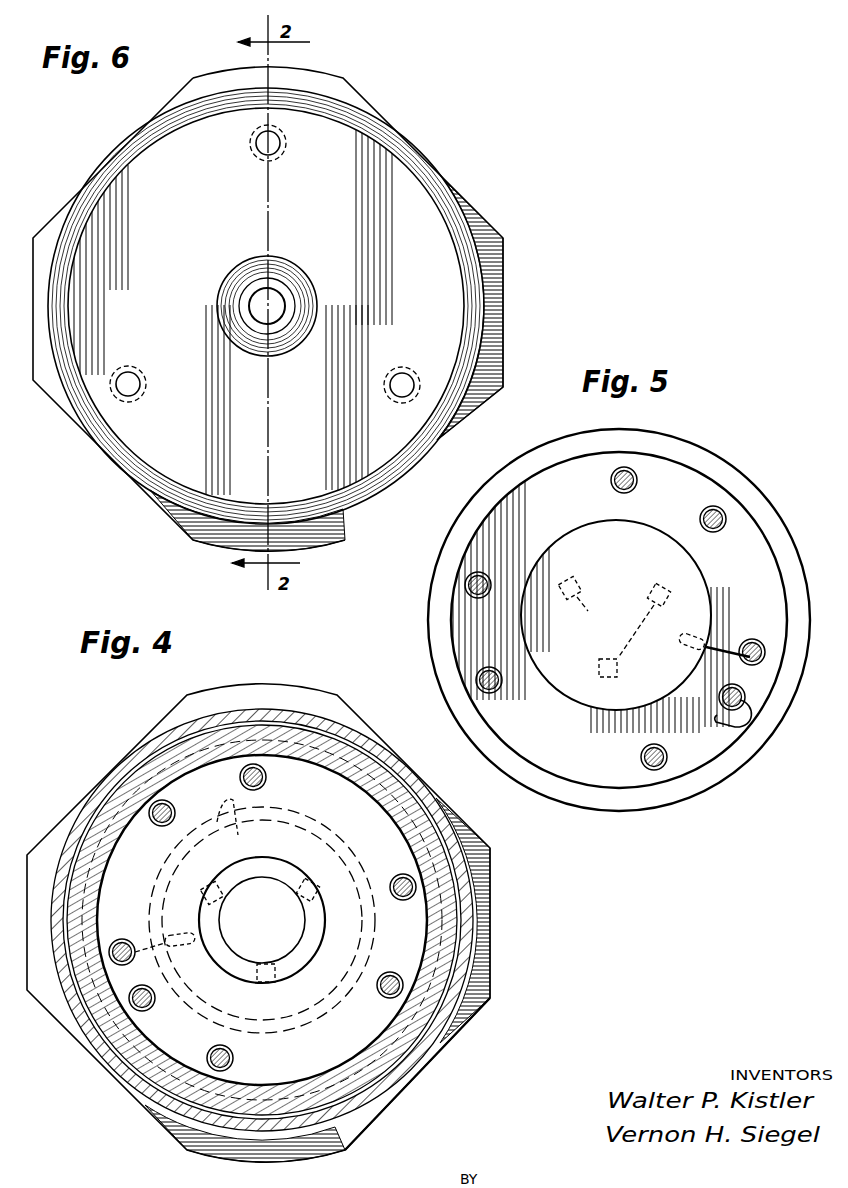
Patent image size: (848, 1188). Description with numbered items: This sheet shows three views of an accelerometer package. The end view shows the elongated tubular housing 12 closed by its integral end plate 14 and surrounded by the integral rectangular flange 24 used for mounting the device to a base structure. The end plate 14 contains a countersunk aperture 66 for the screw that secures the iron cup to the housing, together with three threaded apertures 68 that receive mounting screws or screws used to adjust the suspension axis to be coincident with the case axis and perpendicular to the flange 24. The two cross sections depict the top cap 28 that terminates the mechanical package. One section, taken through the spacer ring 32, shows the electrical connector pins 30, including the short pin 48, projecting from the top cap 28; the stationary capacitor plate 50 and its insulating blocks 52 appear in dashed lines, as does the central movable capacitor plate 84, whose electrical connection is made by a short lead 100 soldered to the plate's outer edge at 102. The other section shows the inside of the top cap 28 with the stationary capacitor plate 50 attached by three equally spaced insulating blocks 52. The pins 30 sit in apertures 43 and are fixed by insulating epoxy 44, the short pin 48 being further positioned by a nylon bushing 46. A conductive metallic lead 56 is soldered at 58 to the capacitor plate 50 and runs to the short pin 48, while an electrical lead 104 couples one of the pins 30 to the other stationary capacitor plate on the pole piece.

In FIG. 6, the tubular housing 12 is at (152, 165).
In FIG. 4, the tubular housing 12 is at (127, 763).
In FIG. 6, the end plate 14 is at (402, 183).
In FIG. 6, the rectangular flange 24 is at (363, 107).
In FIG. 4, the rectangular flange 24 is at (296, 700).
In FIG. 5, the top cap 28 is at (527, 475).
In FIG. 4, the top cap 28 is at (130, 828).
In FIG. 5, the electrical connector pins 30 is at (610, 462).
In FIG. 4, the electrical connector pins 30 is at (267, 777).
In FIG. 4, the spacer ring 32 is at (373, 773).
In FIG. 5, the apertures 43 is at (604, 472).
In FIG. 5, the epoxy 44 is at (626, 478).
In FIG. 5, the nylon bushing 46 is at (738, 655).
In FIG. 5, the short pin 48 is at (748, 633).
In FIG. 4, the short pin 48 is at (120, 939).
In FIG. 5, the stationary capacitor plate 50 is at (577, 528).
In FIG. 4, the stationary capacitor plate 50 is at (328, 855).
In FIG. 5, the insulating blocks 52 is at (614, 626).
In FIG. 4, the insulating blocks 52 is at (318, 897).
In FIG. 5, the conductive metallic lead 56 is at (713, 638).
In FIG. 5, the solder joint 58 is at (694, 628).
In FIG. 4, the solder joint 58 is at (165, 942).
In FIG. 6, the countersunk aperture 66 is at (300, 300).
In FIG. 6, the threaded apertures 68 is at (255, 143).
In FIG. 4, the movable capacitor plate 84 is at (310, 820).
In FIG. 4, the short lead 100 is at (262, 920).
In FIG. 4, the solder connection 102 is at (212, 817).
In FIG. 5, the electrical lead 104 is at (708, 714).